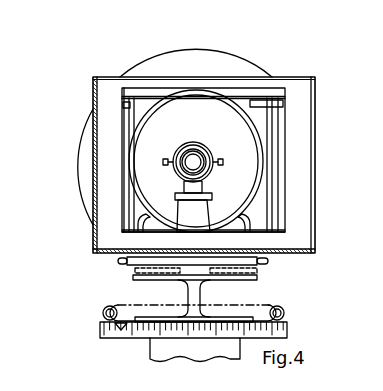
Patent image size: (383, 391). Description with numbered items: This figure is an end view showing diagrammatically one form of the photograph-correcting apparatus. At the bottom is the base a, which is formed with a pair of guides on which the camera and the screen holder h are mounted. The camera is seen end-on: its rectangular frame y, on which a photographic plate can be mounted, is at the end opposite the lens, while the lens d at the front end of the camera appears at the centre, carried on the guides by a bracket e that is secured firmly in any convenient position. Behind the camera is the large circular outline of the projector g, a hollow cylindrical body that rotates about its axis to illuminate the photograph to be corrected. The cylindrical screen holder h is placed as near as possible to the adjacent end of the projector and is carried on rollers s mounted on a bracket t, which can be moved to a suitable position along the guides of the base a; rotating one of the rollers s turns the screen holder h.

The frame y is at (100, 77).
The projector g is at (208, 52).
The screen holder h is at (228, 98).
The lens d is at (206, 155).
The bracket e is at (208, 212).
The rollers s is at (138, 222).
The bracket t is at (130, 232).
The base a is at (152, 347).